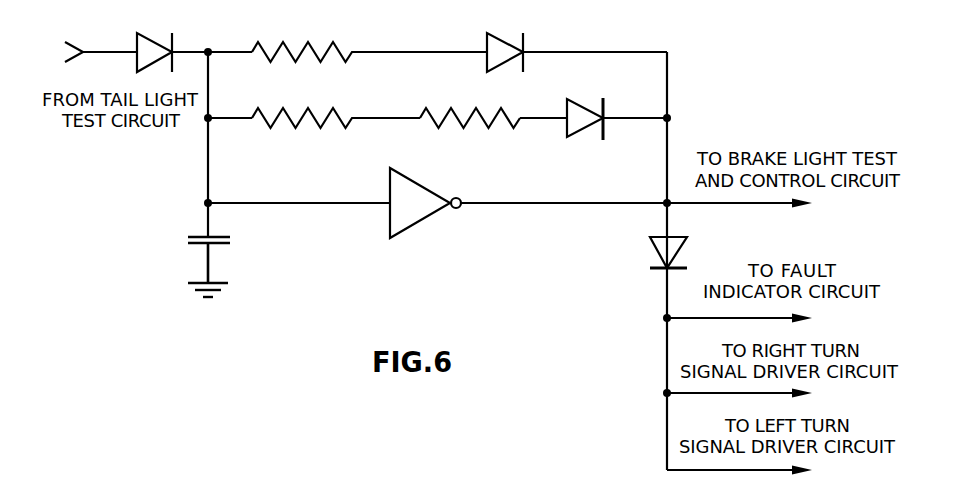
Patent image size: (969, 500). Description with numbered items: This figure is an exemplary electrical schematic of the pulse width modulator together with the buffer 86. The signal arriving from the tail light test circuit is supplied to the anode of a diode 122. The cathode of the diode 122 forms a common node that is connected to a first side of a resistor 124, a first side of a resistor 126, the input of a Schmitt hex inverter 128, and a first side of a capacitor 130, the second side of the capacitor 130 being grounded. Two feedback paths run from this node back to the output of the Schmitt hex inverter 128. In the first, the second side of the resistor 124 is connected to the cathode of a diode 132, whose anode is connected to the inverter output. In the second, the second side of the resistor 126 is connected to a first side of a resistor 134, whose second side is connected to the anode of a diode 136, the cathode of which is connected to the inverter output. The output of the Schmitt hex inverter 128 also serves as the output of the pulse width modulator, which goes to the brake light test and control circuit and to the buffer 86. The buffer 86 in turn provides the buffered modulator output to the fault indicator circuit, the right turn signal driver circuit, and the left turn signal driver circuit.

The diode 122 is at (152, 38).
The resistor 124 is at (309, 43).
The resistor 126 is at (306, 128).
The Schmitt hex inverter 128 is at (398, 232).
The capacitor 130 is at (232, 238).
The diode 132 is at (510, 50).
The resistor 134 is at (466, 128).
The diode 136 is at (583, 135).
The buffer 86 is at (650, 253).